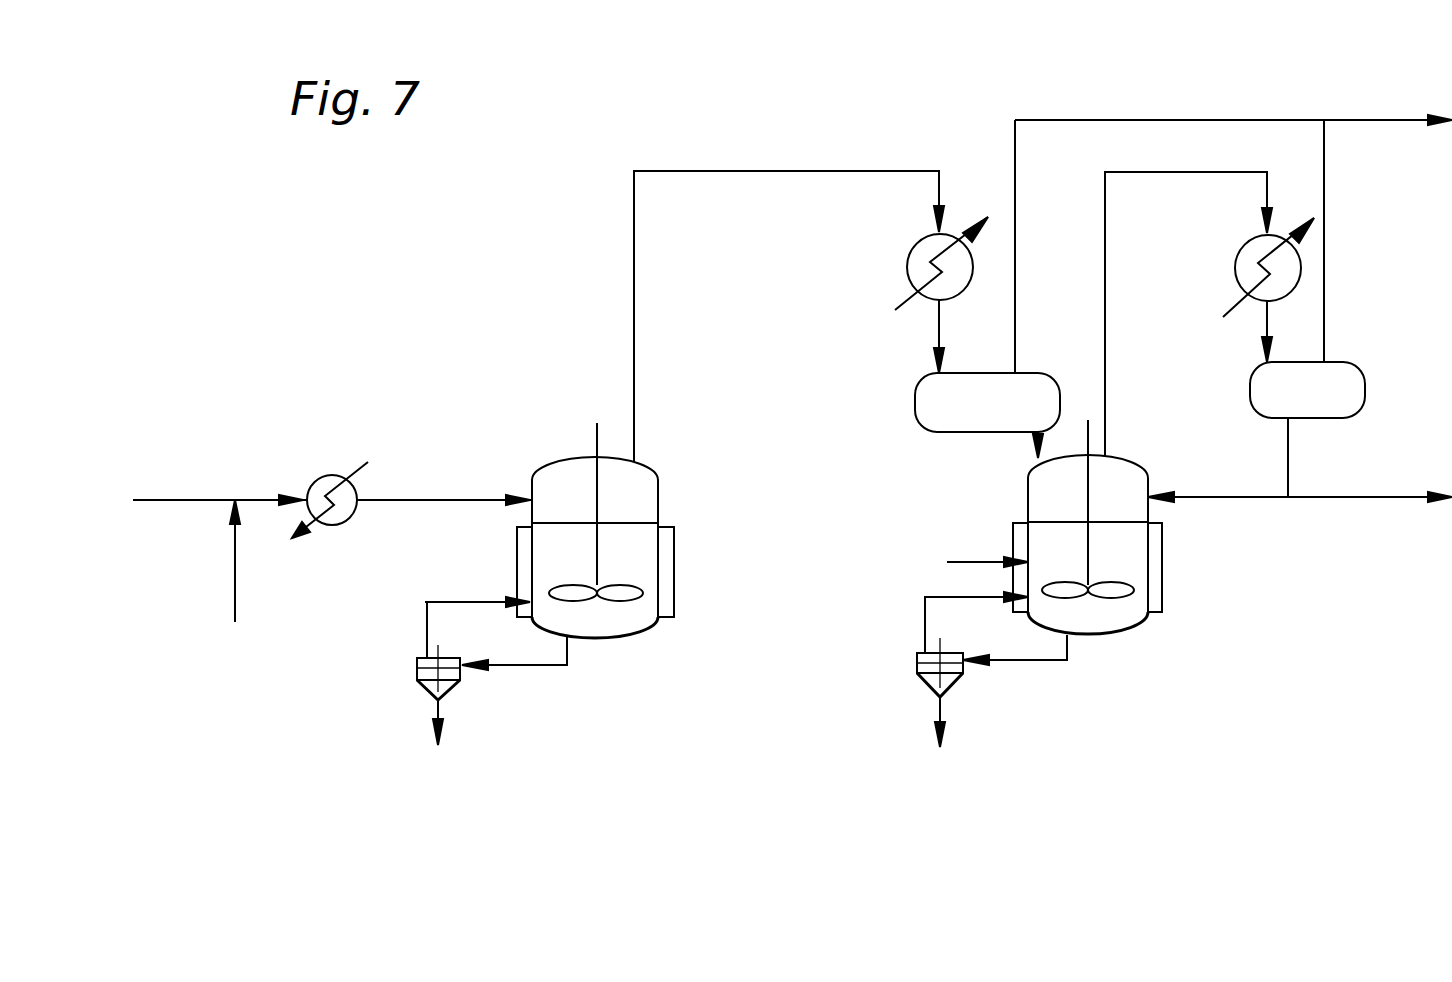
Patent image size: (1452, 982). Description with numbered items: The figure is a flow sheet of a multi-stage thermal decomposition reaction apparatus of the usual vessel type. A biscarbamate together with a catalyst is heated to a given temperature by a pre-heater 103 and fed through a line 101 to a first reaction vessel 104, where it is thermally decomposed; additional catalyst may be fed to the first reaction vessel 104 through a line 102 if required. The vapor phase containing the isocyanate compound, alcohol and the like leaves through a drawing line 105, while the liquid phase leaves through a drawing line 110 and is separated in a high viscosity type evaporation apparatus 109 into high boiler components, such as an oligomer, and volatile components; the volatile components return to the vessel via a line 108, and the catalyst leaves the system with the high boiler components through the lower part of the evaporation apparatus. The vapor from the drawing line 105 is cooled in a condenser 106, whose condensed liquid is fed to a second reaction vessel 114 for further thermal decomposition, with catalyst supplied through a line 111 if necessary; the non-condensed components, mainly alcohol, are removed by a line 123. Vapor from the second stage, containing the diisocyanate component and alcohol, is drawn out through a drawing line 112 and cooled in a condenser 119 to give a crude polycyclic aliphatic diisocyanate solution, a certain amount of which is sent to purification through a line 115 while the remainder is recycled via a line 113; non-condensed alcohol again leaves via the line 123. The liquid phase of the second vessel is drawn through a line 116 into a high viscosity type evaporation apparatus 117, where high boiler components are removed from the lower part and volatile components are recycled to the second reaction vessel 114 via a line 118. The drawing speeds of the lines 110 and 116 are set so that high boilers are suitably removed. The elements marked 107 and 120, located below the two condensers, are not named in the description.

The line 101 is at (176, 500).
The line 102 is at (235, 585).
The pre-heater 103 is at (371, 461).
The first reaction vessel 104 is at (658, 480).
The drawing line 105 is at (781, 171).
The condenser 106 is at (906, 265).
The condensate line 107 is at (939, 325).
The line 108 is at (465, 602).
The high viscosity type evaporation apparatus 109 is at (427, 692).
The drawing line 110 is at (515, 665).
The line 111 is at (968, 562).
The drawing line 112 is at (1105, 312).
The line 113 is at (1227, 497).
The second reaction vessel 114 is at (978, 433).
The line 115 is at (1368, 497).
The line 116 is at (1028, 660).
The high viscosity type evaporation apparatus 117 is at (925, 688).
The line 118 is at (925, 610).
The condenser 119 is at (1235, 263).
The second separator drum 120 is at (1267, 322).
The line 123 is at (1380, 121).